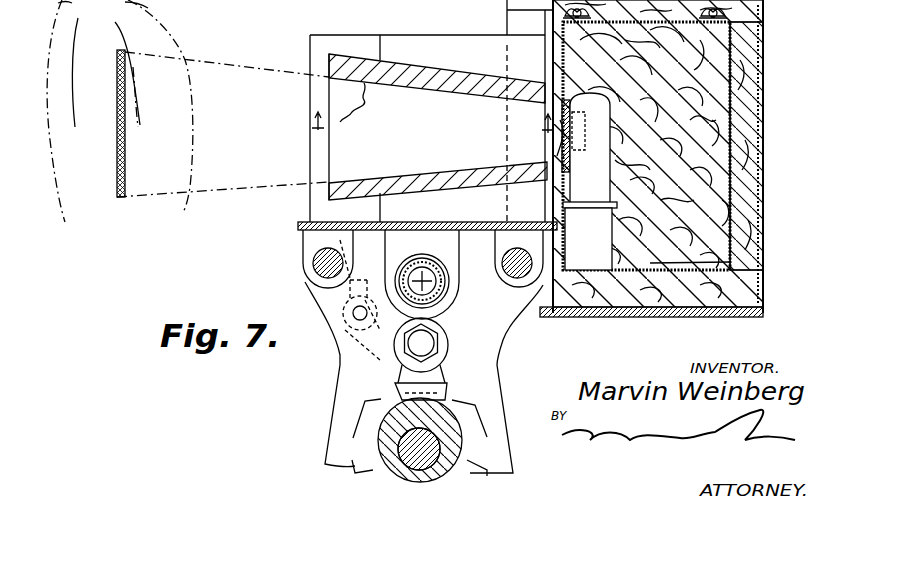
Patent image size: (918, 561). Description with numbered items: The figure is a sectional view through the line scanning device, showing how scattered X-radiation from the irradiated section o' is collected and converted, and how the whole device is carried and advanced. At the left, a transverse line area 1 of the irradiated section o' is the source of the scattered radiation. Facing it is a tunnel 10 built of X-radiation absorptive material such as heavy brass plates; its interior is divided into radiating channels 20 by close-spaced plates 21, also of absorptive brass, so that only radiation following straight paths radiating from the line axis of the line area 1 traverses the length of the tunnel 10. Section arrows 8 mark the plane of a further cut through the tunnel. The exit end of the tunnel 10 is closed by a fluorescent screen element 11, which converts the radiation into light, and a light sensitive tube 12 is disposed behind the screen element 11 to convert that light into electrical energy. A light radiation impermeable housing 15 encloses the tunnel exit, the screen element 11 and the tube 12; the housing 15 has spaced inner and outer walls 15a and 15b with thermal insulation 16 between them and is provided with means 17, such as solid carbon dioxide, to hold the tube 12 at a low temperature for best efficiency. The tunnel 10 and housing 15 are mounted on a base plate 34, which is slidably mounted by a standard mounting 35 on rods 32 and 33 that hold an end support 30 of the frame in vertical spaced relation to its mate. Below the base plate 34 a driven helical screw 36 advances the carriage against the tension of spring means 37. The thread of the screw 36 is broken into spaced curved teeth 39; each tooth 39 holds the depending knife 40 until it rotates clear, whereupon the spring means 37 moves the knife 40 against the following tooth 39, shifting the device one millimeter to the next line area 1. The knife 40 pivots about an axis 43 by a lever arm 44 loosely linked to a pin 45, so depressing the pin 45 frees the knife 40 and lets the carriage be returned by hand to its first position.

The line area 1 is at (120, 50).
The irradiated section o' is at (148, 152).
The section line 8- 8 is at (433, 114).
The tunnel 10 is at (332, 59).
The fluorescent screen element 11 is at (565, 150).
The light sensitive tube 12 is at (580, 183).
The housing 15 is at (684, 156).
The inner wall 15a is at (763, 166).
The outer wall 15b is at (730, 113).
The thermal insulation 16 is at (740, 220).
The cooling means 17 is at (650, 263).
The radiating channels 20 is at (336, 89).
The close-spaced plates 21 is at (335, 146).
The end support 30 is at (394, 356).
The rod 32 is at (449, 324).
The rod 33 is at (306, 290).
The base plate 34 is at (298, 222).
The mounting 35 is at (306, 248).
The helical screw 36 is at (455, 425).
The spring means 37 is at (414, 264).
The teeth 39 is at (365, 423).
The knife 40 is at (442, 374).
The pivot axis 43 is at (426, 343).
The lever arm 44 is at (345, 363).
The pin 45 is at (352, 238).